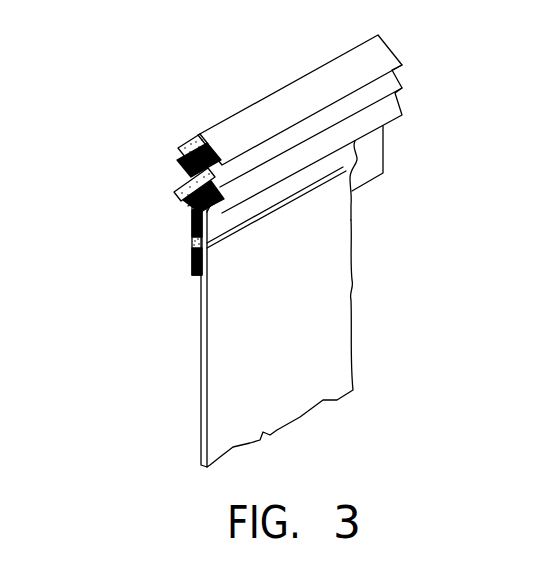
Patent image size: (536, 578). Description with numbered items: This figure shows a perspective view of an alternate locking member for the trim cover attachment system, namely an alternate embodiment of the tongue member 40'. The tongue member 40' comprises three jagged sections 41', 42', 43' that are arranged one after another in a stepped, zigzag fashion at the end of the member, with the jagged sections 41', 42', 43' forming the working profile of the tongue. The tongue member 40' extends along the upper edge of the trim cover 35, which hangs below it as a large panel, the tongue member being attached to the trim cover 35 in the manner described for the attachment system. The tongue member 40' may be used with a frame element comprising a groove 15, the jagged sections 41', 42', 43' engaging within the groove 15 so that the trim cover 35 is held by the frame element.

The tongue member 40' is at (232, 124).
The jagged section 41' is at (129, 142).
The jagged section 42' is at (130, 175).
The jagged section 43' is at (128, 224).
The groove 15 is at (346, 178).
The trim cover 35 is at (330, 279).